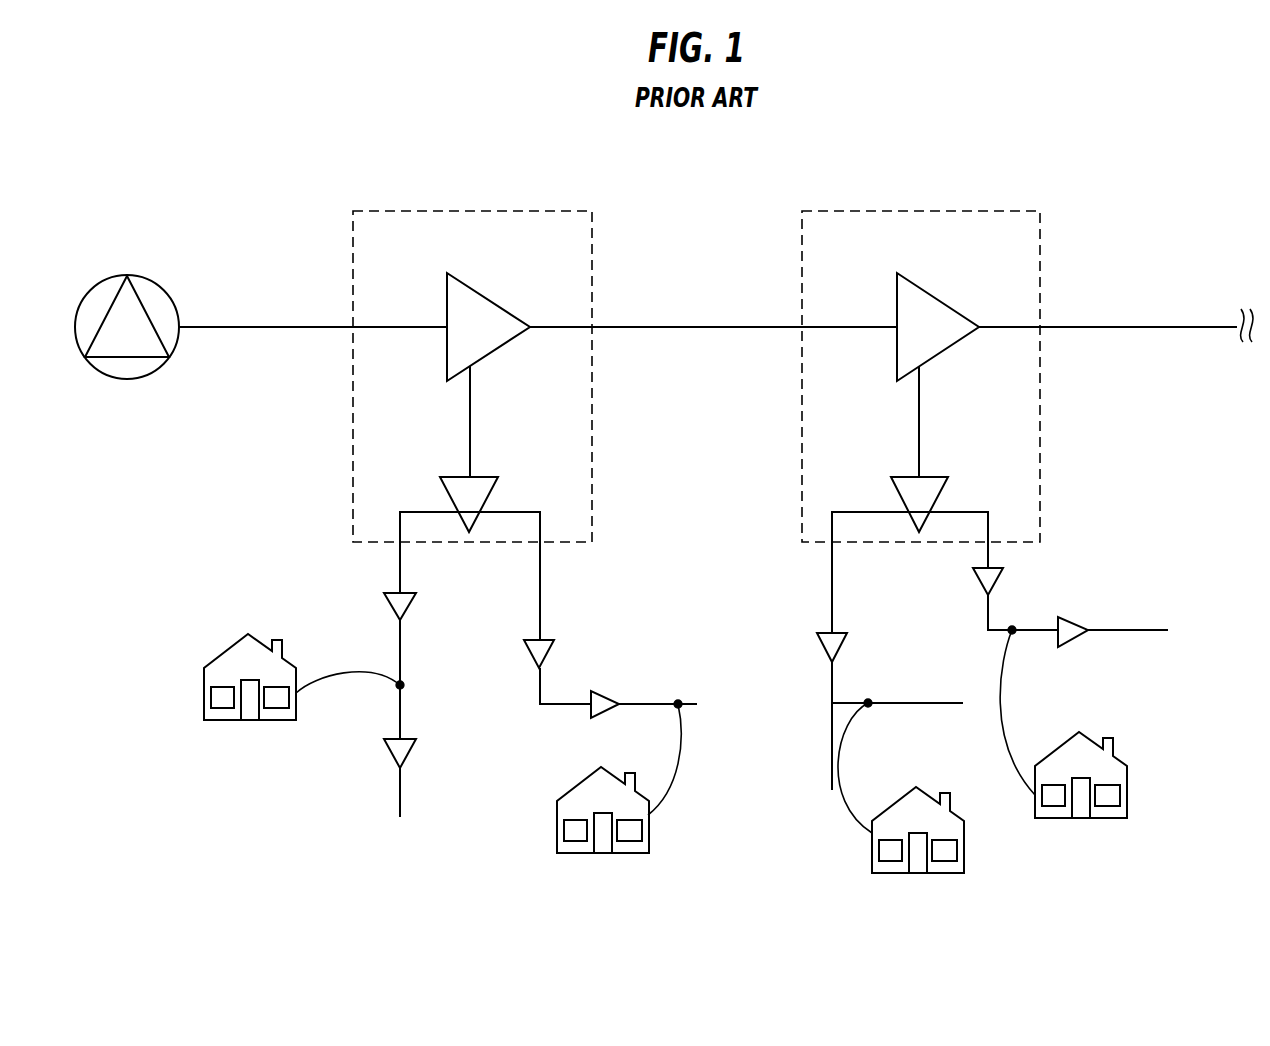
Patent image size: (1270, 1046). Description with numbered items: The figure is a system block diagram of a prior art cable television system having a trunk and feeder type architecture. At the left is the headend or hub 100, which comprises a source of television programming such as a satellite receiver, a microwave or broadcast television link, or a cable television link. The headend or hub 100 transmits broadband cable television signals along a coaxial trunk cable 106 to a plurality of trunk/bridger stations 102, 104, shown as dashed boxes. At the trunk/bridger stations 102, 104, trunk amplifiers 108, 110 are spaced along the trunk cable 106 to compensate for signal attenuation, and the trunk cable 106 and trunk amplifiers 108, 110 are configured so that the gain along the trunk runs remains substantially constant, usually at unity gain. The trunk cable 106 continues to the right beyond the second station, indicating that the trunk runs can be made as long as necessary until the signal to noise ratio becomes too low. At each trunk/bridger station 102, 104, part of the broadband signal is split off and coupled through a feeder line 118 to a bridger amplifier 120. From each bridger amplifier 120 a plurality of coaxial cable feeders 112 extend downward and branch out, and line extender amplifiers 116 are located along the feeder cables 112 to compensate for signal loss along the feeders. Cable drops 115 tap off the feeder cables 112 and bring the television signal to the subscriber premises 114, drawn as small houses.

The headend or hub 100 is at (166, 292).
The trunk/bridger station 102 is at (592, 247).
The trunk/bridger station 104 is at (1040, 247).
The coaxial trunk cable 106 is at (258, 327).
The trunk amplifier 108 is at (474, 290).
The trunk amplifier 110 is at (924, 290).
The coaxial cable feeder 112 is at (400, 572).
The subscriber premises 114 is at (222, 652).
The cable drop 115 is at (343, 672).
The line extender amplifier 116 is at (412, 607).
The feeder line 118 is at (470, 410).
The bridger amplifier 120 is at (488, 477).